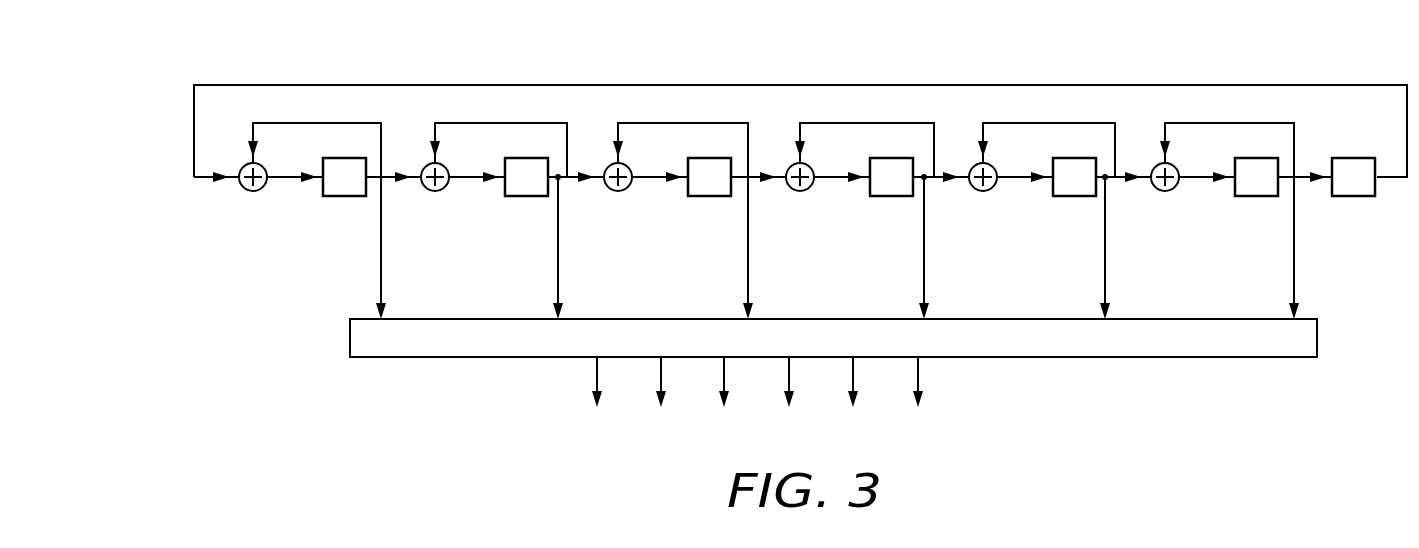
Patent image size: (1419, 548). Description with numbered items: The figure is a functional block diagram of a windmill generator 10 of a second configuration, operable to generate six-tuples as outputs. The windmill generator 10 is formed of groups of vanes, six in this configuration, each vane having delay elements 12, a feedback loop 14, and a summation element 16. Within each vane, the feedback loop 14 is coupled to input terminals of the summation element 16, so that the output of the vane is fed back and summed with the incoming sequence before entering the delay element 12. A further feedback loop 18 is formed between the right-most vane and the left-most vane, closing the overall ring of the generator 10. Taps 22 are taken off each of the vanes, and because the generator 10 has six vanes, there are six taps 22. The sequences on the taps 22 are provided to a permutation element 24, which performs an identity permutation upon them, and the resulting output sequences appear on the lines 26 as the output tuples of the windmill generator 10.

The windmill generator 10 is at (795, 66).
The delay element 12 is at (352, 196).
The feedback loop 14 is at (272, 123).
The summing element 16 is at (251, 191).
The feedback loop 18 is at (315, 85).
The tap 22 is at (381, 276).
The permutation element 24 is at (348, 338).
The output line 26 is at (590, 373).